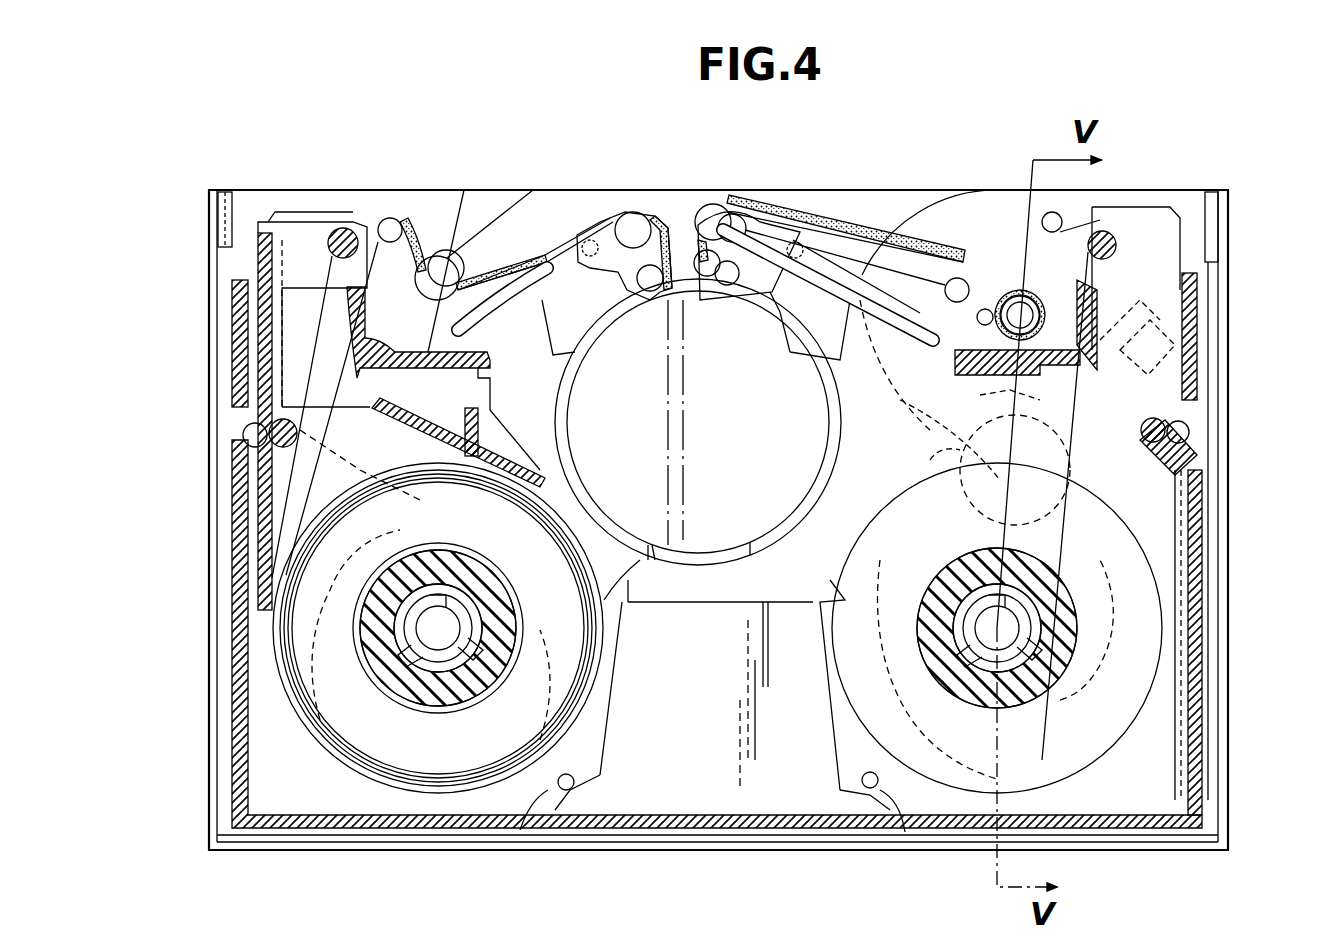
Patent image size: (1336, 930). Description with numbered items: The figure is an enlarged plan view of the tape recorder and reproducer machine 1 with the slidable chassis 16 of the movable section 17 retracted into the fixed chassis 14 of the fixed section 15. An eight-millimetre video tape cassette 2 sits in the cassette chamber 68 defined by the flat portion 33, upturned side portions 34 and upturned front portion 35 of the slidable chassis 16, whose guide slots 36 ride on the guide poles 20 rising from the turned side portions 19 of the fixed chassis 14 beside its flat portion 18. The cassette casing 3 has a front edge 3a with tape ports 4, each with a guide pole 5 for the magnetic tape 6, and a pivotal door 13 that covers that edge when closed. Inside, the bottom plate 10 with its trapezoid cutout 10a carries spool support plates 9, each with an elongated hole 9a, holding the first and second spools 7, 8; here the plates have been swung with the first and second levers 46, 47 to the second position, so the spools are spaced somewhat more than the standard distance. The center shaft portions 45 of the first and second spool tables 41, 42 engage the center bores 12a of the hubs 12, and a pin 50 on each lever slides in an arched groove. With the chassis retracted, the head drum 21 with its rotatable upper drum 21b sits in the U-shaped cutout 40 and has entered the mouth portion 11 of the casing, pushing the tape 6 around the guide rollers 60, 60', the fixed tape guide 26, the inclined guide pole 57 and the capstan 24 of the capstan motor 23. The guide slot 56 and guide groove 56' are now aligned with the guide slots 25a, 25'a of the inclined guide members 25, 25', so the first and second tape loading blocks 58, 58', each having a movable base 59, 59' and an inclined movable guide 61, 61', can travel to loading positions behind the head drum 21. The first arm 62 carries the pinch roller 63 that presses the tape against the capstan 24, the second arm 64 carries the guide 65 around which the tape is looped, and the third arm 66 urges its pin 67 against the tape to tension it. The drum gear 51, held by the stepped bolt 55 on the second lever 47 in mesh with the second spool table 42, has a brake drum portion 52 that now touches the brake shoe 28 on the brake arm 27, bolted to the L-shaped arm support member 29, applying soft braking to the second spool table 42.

The tape recorder and reproducer machine 1 is at (200, 248).
The tape cassette 2 is at (1212, 470).
The cassette casing 3 is at (1208, 510).
The front edge 3a is at (300, 222).
The tape port 4 is at (270, 215).
The guide pole 5 is at (330, 244).
The magnetic tape 6 is at (530, 252).
The first spool 7 is at (610, 706).
The second spool 8 is at (825, 712).
The spool support plate 9 is at (605, 736).
The elongated hole 9a is at (578, 782).
The bottom plate 10 is at (482, 400).
The trapezoid cutout 10a is at (674, 604).
The mouth portion 11 is at (718, 604).
The hub 12 is at (395, 578).
The center bore 12a is at (388, 604).
The pivotal door 13 is at (240, 345).
The fixed chassis 14 is at (440, 212).
The fixed section 15 is at (516, 188).
The slidable chassis 16 is at (248, 843).
The movable section 17 is at (205, 730).
The flat portion 18 is at (362, 200).
The turned side portion 19 is at (1218, 235).
The guide pole 20 is at (246, 812).
The head drum 21 is at (652, 548).
The upper drum 21b is at (752, 538).
The capstan motor 23 is at (920, 212).
The capstan 24 is at (983, 312).
The guide member 25 is at (412, 230).
The guide slot 25a is at (548, 255).
The guide member 25' is at (846, 200).
The guide slot 25'a is at (845, 271).
The fixed tape guide 26 is at (448, 272).
The brake arm 27 is at (1112, 340).
The brake shoe 28 is at (960, 319).
The arm support member 29 is at (1200, 340).
The flat portion 33 is at (228, 300).
The upturned side portion 34 is at (236, 400).
The upturned front portion 35 is at (698, 845).
The guide slot 36 is at (248, 444).
The U-shaped cutout 40 is at (845, 428).
The first spool table 41 is at (430, 594).
The second spool table 42 is at (1010, 580).
The center shaft portion 45 is at (446, 594).
The first lever 46 is at (330, 455).
The second lever 47 is at (922, 488).
The pin 50 is at (528, 830).
The drum gear 51 is at (950, 473).
The brake drum portion 52 is at (985, 396).
The stepped bolt 55 is at (1035, 442).
The guide slot 56 is at (502, 316).
The guide groove 56' is at (828, 300).
The inclined guide pole 57 is at (945, 290).
The first tape loading block 58 is at (607, 283).
The second tape loading block 58' is at (774, 286).
The movable base 59 is at (622, 333).
The movable base 59' is at (780, 342).
The guide roller 60 is at (631, 197).
The guide roller 60' is at (720, 192).
The inclined movable guide 61 is at (657, 299).
The inclined movable guide 61' is at (736, 264).
The first arm 62 is at (1105, 288).
The pinch roller 63 is at (1036, 300).
The second arm 64 is at (1108, 210).
The guide 65 is at (1042, 220).
The third arm 66 is at (400, 285).
The pin 67 is at (392, 222).
The cassette chamber 68 is at (1212, 770).